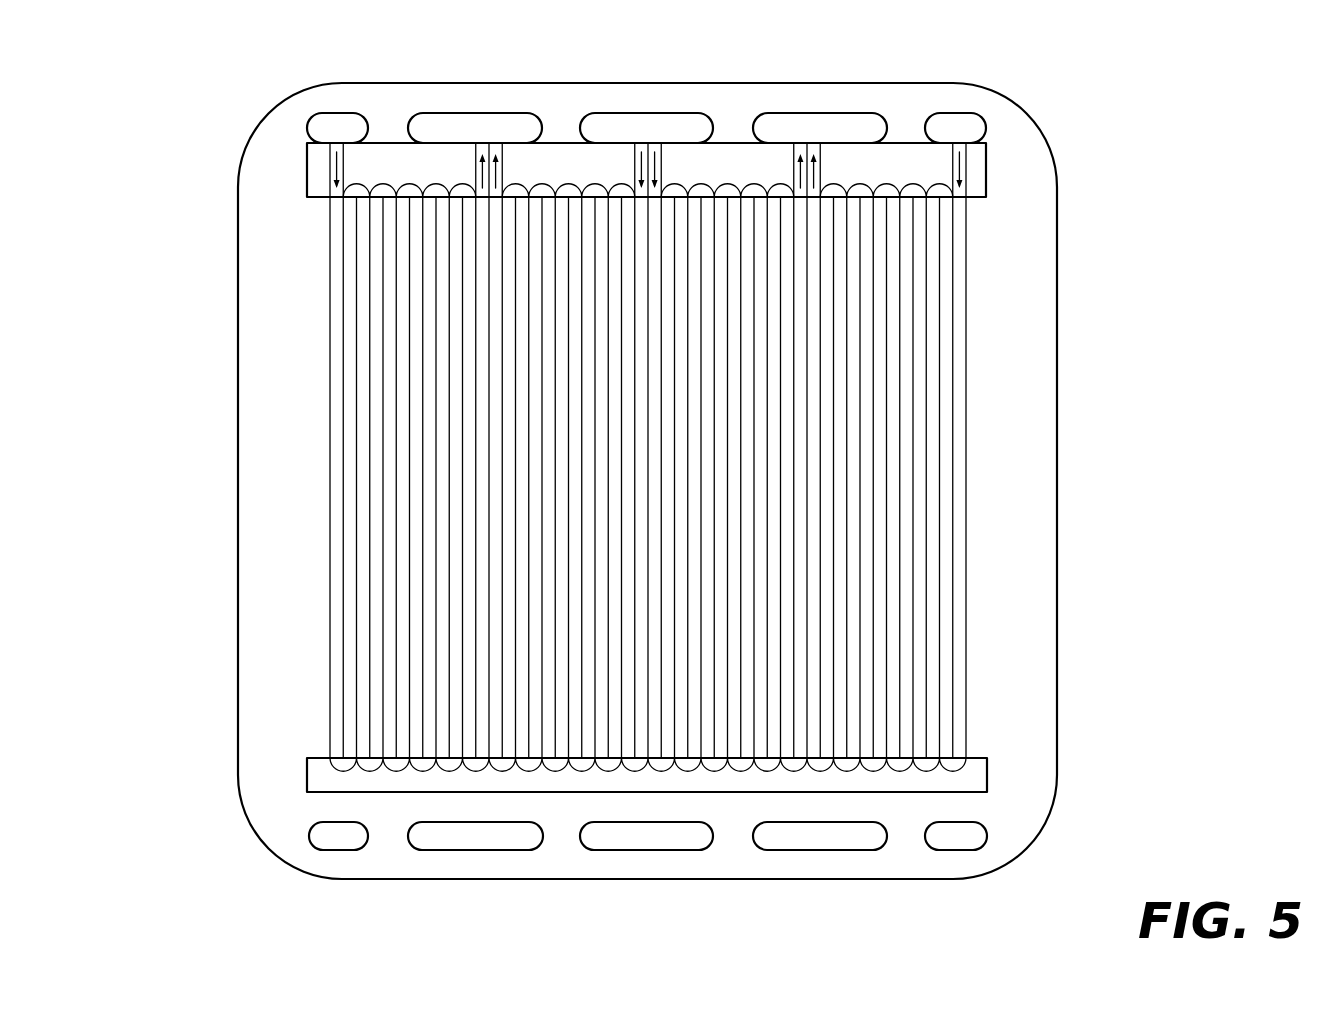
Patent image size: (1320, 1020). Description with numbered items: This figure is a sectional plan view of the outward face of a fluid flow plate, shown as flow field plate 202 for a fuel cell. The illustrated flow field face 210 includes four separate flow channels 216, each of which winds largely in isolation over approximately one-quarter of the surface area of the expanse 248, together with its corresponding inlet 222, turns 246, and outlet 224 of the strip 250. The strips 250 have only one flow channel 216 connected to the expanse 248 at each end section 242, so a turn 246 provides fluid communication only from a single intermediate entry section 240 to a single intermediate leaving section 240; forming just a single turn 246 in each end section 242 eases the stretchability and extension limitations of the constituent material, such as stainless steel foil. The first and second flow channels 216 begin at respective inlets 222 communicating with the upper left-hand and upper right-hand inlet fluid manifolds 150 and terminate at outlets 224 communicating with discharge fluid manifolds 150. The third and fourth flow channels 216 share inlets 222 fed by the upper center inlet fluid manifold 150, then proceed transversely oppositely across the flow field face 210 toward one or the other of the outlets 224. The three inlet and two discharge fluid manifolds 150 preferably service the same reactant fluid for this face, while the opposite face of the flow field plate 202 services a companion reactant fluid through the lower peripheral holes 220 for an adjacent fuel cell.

The fluid manifolds 150 is at (428, 127).
The flow field plate 202 is at (1170, 375).
The flow field face 210 is at (1042, 319).
The flow channels 216 is at (347, 220).
The lower peripheral holes 220 is at (693, 124).
The inlets 222 is at (337, 150).
The outlets 224 is at (493, 150).
The intermediate entry section and intermediate leaving section 240 is at (915, 432).
The end section 242 is at (580, 773).
The turn 246 is at (458, 190).
The expanse 248 is at (962, 267).
The strip 250 is at (977, 168).